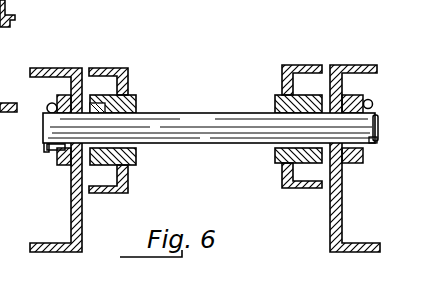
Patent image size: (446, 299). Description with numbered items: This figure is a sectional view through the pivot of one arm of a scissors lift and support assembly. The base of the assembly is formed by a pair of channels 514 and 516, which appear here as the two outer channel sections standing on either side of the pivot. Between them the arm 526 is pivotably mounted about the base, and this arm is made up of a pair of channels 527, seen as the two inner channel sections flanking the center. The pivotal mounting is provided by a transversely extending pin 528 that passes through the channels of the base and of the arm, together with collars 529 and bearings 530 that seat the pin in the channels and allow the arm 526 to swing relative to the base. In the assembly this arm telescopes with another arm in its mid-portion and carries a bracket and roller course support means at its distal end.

The channel 514 is at (355, 65).
The channel 516 is at (60, 68).
The arm 526 is at (284, 66).
The channels 527 is at (283, 184).
The pin 528 is at (207, 127).
The collars 529 is at (135, 97).
The bearings 530 is at (323, 152).